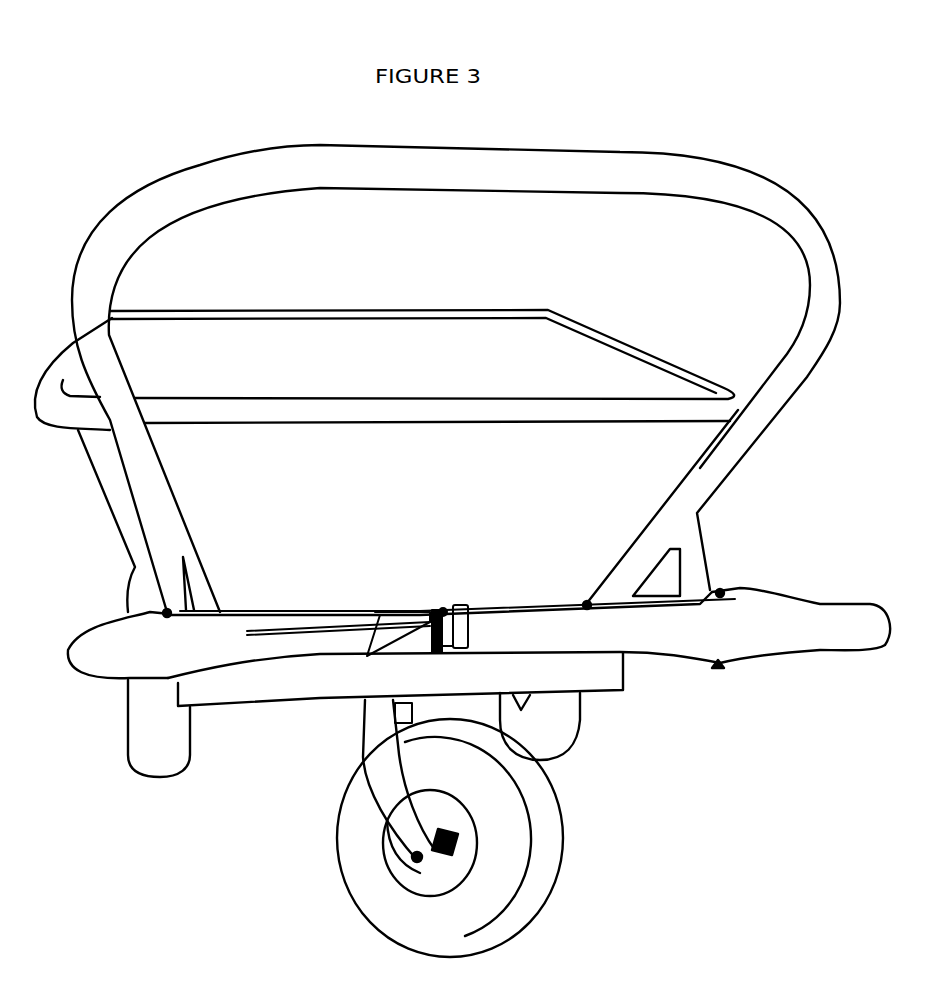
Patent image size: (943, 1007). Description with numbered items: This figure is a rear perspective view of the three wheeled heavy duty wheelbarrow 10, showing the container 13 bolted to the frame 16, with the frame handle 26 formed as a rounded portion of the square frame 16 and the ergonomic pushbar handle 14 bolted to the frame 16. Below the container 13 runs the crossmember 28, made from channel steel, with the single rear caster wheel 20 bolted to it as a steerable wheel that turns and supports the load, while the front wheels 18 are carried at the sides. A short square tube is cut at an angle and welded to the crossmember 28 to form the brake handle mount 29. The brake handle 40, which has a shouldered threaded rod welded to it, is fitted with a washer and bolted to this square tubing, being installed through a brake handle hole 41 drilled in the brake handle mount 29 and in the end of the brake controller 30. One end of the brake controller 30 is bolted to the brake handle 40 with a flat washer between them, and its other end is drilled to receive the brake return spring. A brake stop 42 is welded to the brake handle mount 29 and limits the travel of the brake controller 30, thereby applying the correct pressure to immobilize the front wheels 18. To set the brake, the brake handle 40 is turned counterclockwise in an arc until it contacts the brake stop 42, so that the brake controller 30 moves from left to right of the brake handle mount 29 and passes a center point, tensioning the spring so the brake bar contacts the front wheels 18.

The three wheeled heavy duty wheelbarrow 10 is at (693, 309).
The container 13 is at (368, 382).
The ergonomic pushbar handle 14 is at (352, 163).
The frame 16 is at (213, 667).
The front wheels 18 is at (153, 748).
The rear caster wheel 20 is at (507, 858).
The frame handle 26 is at (93, 653).
The crossmember 28 is at (442, 680).
The brake handle mount 29 is at (450, 701).
The brake controller 30 is at (420, 625).
The brake handle 40 is at (283, 630).
The brake handle hole 41 is at (397, 616).
The brake stop 42 is at (468, 632).